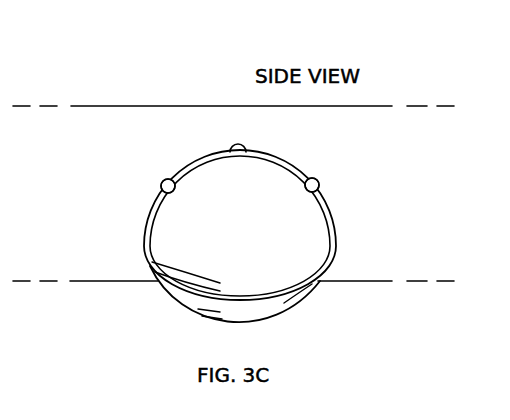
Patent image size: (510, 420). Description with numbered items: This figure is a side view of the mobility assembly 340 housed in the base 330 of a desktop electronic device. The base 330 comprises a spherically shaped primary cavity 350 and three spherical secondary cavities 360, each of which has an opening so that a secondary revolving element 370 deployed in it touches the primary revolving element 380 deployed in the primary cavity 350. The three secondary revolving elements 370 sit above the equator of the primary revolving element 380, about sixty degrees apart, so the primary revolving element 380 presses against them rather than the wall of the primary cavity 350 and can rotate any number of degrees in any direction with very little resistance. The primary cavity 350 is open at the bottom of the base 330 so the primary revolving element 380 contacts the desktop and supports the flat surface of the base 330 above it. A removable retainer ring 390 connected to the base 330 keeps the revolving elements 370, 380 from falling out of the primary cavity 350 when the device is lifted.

The base 330 is at (168, 106).
The mobility assembly 340 is at (368, 127).
The primary cavity 350 is at (332, 203).
The secondary cavities 360 is at (247, 142).
The secondary revolving elements 370 is at (232, 146).
The primary revolving element 380 is at (237, 309).
The retainer ring 390 is at (292, 294).